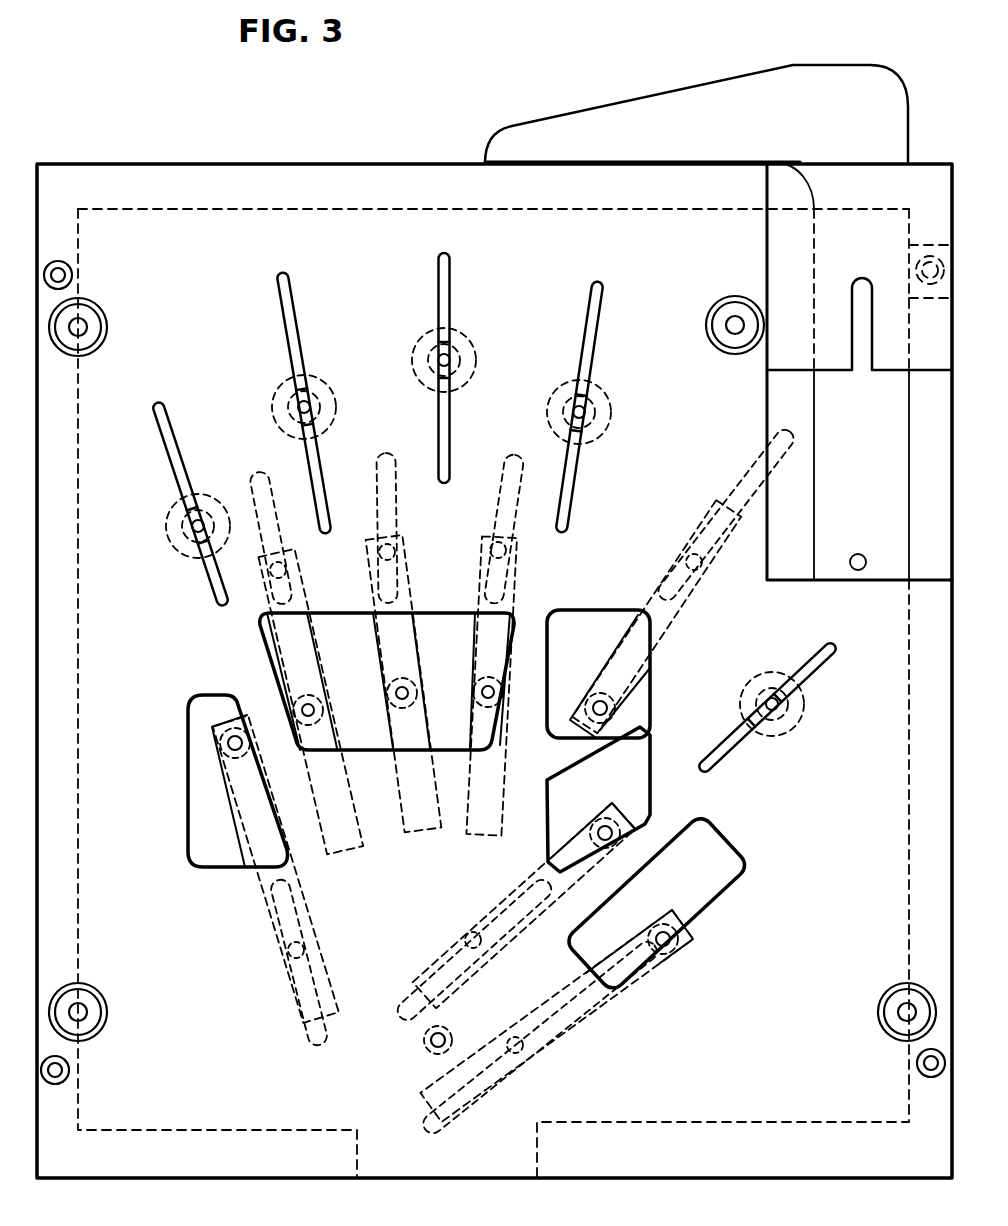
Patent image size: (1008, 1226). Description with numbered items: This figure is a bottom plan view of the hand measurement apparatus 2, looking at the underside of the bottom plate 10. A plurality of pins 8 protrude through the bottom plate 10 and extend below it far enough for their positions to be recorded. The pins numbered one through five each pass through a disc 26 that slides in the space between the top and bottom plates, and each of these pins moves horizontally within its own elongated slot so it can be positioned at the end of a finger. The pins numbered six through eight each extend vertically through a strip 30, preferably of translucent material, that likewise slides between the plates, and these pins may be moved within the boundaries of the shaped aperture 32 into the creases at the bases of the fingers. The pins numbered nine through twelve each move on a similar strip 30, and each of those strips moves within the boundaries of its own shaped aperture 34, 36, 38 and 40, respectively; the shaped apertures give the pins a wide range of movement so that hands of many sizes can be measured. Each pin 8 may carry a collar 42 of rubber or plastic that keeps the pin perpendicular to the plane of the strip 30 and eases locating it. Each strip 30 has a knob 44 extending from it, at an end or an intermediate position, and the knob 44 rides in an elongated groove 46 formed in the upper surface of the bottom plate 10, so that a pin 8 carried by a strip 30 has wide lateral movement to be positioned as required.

The hand measurement apparatus 2 is at (232, 158).
The bottom plate 10 is at (349, 170).
The pins 8 is at (592, 408).
The disc 26 is at (611, 414).
The collar 42 is at (596, 425).
The shaped aperture 32 is at (258, 637).
The shaped aperture 34 is at (745, 868).
The shaped aperture 36 is at (640, 772).
The shaped aperture 38 is at (642, 702).
The shaped aperture 40 is at (206, 866).
The strip 30 is at (342, 857).
The knob 44 is at (286, 572).
The elongated groove 46 is at (276, 532).